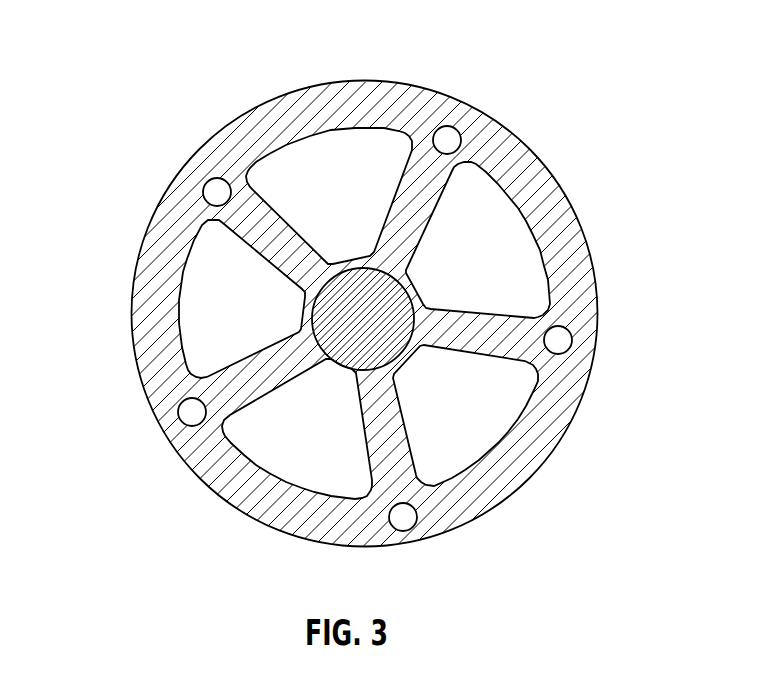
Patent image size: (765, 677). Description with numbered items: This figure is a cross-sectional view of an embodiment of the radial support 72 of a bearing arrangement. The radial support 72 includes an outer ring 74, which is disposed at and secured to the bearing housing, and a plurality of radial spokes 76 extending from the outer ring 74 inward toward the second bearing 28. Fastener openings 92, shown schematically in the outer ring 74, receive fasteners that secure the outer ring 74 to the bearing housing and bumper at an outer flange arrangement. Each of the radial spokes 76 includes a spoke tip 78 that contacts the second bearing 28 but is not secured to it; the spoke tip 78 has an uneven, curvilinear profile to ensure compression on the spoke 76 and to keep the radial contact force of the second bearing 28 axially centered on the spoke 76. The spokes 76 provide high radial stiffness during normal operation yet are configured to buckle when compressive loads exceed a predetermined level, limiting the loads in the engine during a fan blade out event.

The radial support 72 is at (117, 100).
The outer ring 74 is at (537, 178).
The radial spokes 76 is at (260, 212).
The spoke tip 78 is at (337, 362).
The second bearing 28 is at (340, 327).
The fastener openings 92 is at (207, 186).